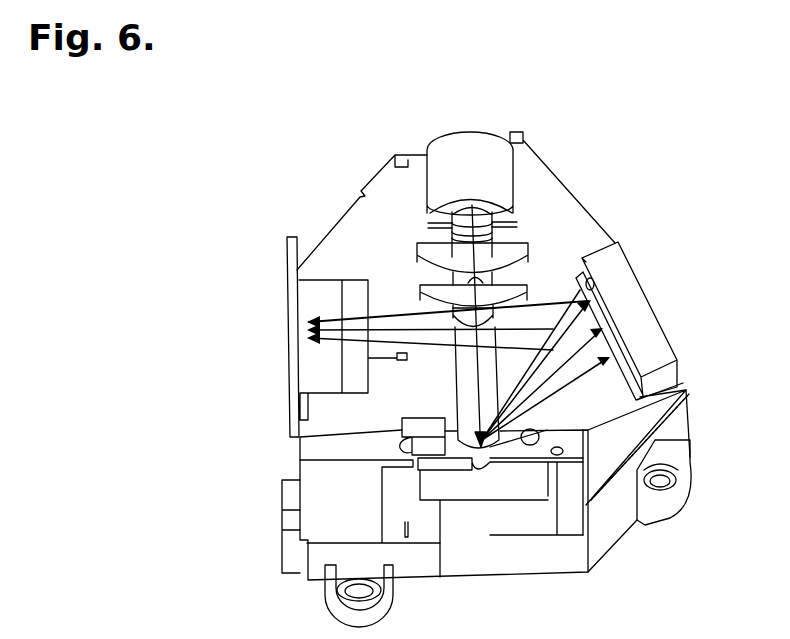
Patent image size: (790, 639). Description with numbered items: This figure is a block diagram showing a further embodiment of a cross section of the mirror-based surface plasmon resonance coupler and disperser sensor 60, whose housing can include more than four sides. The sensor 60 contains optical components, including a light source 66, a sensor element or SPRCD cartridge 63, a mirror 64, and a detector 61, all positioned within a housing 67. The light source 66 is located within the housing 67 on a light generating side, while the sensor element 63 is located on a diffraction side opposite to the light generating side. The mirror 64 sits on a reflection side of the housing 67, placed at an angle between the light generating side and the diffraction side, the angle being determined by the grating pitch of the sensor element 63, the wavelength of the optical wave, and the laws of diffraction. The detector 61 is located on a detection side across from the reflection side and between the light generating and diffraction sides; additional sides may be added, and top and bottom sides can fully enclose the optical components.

The mirror-based surface plasmon resonance coupler and disperser sensor 60 is at (155, 100).
The detector 61 is at (287, 340).
The sensor element or SPRCD cartridge 63 is at (497, 490).
The mirror 64 is at (653, 318).
The light source 66 is at (462, 131).
The housing 67 is at (352, 207).